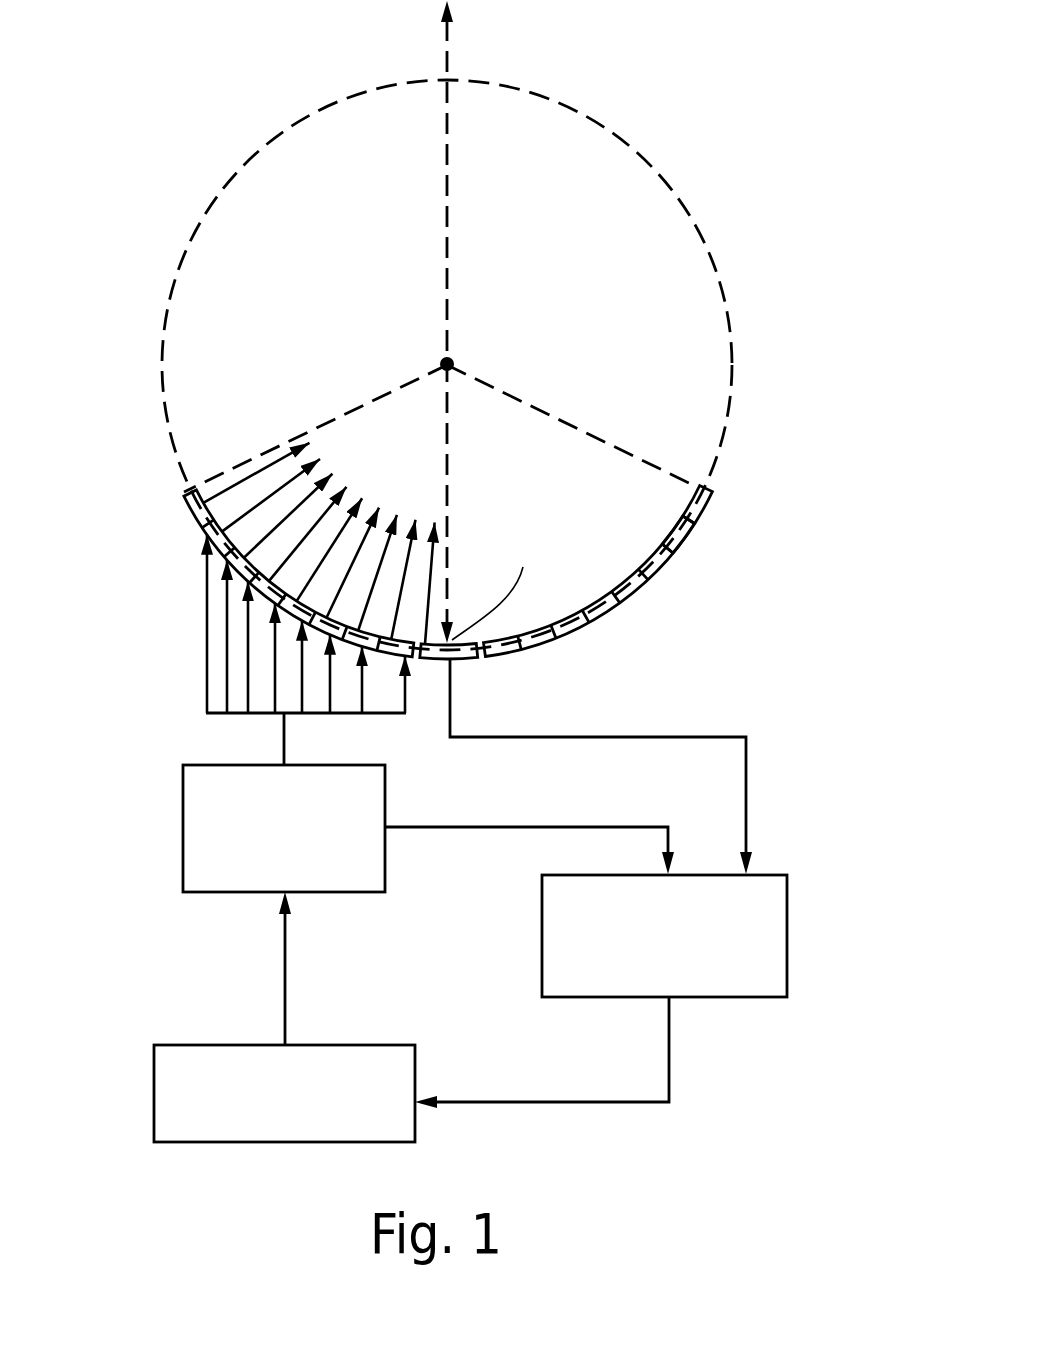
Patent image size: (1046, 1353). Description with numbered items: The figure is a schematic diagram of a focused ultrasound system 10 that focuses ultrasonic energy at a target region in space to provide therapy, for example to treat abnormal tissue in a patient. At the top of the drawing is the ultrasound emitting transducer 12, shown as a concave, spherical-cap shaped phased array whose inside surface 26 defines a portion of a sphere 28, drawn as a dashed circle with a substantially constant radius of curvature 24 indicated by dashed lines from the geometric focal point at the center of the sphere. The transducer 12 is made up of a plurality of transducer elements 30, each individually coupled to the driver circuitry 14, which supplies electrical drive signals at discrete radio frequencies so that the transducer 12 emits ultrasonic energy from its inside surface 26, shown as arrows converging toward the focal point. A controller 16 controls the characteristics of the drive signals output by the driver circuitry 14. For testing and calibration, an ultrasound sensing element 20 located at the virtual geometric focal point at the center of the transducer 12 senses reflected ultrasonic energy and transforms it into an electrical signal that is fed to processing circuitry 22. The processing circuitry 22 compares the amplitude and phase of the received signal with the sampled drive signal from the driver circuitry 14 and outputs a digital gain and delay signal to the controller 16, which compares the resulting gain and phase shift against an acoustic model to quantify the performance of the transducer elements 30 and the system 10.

The focused ultrasound system 10 is at (818, 512).
The ultrasound emitting transducer 12 is at (449, 609).
The driver circuitry 14 is at (203, 808).
The controller 16 is at (193, 1077).
The ultrasound sensing element 20 is at (478, 662).
The processing circuitry 22 is at (770, 963).
The radius of curvature 24 is at (548, 408).
The inside surface 26 is at (688, 540).
The sphere 28 is at (683, 200).
The transducer elements 30 is at (575, 632).